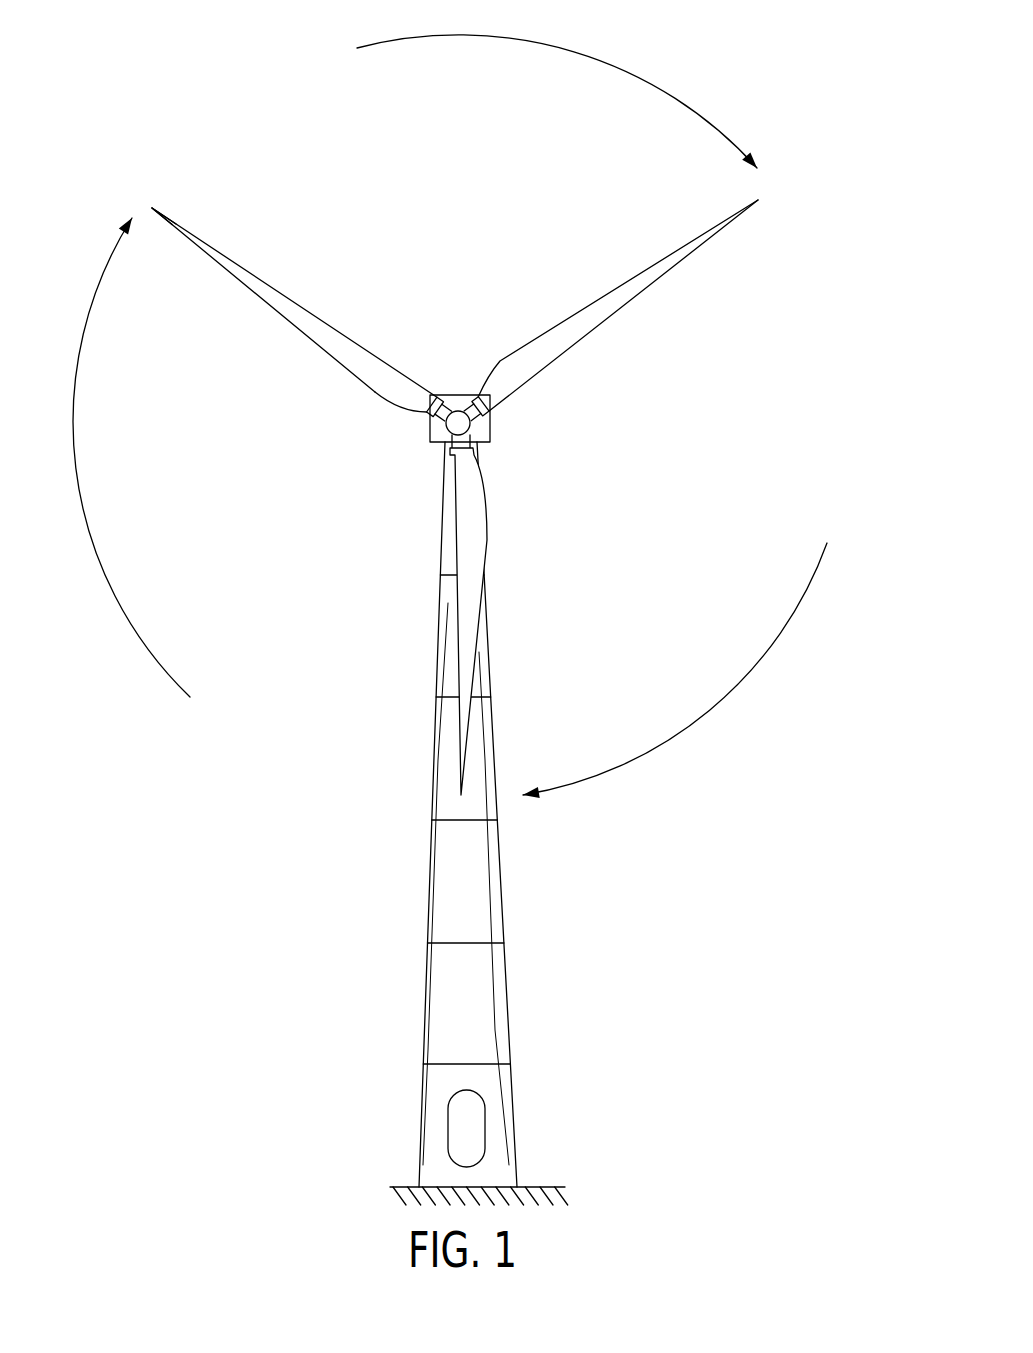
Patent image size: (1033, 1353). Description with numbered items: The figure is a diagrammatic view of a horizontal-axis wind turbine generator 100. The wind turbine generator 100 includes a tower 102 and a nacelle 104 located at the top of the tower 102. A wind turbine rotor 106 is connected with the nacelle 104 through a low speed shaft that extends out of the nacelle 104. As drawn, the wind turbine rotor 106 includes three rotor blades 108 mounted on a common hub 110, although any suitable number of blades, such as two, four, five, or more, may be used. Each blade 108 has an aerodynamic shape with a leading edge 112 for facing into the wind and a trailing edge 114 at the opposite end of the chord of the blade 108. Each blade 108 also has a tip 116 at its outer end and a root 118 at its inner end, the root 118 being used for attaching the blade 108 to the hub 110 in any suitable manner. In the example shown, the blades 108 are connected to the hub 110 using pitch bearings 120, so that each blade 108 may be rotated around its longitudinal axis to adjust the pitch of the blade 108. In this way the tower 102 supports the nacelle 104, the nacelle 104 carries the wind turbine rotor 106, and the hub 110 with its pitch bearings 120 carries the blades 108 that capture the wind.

The wind turbine generator 100 is at (530, 1009).
The tower 102 is at (445, 895).
The nacelle 104 is at (429, 443).
The wind turbine rotor 106 is at (512, 411).
The rotor blade 108 is at (338, 348).
The hub 110 is at (458, 418).
The leading edge 112 is at (273, 291).
The trailing edge 114 is at (270, 306).
The tip 116 is at (138, 199).
The root 118 is at (418, 418).
The pitch bearing 120 is at (433, 395).